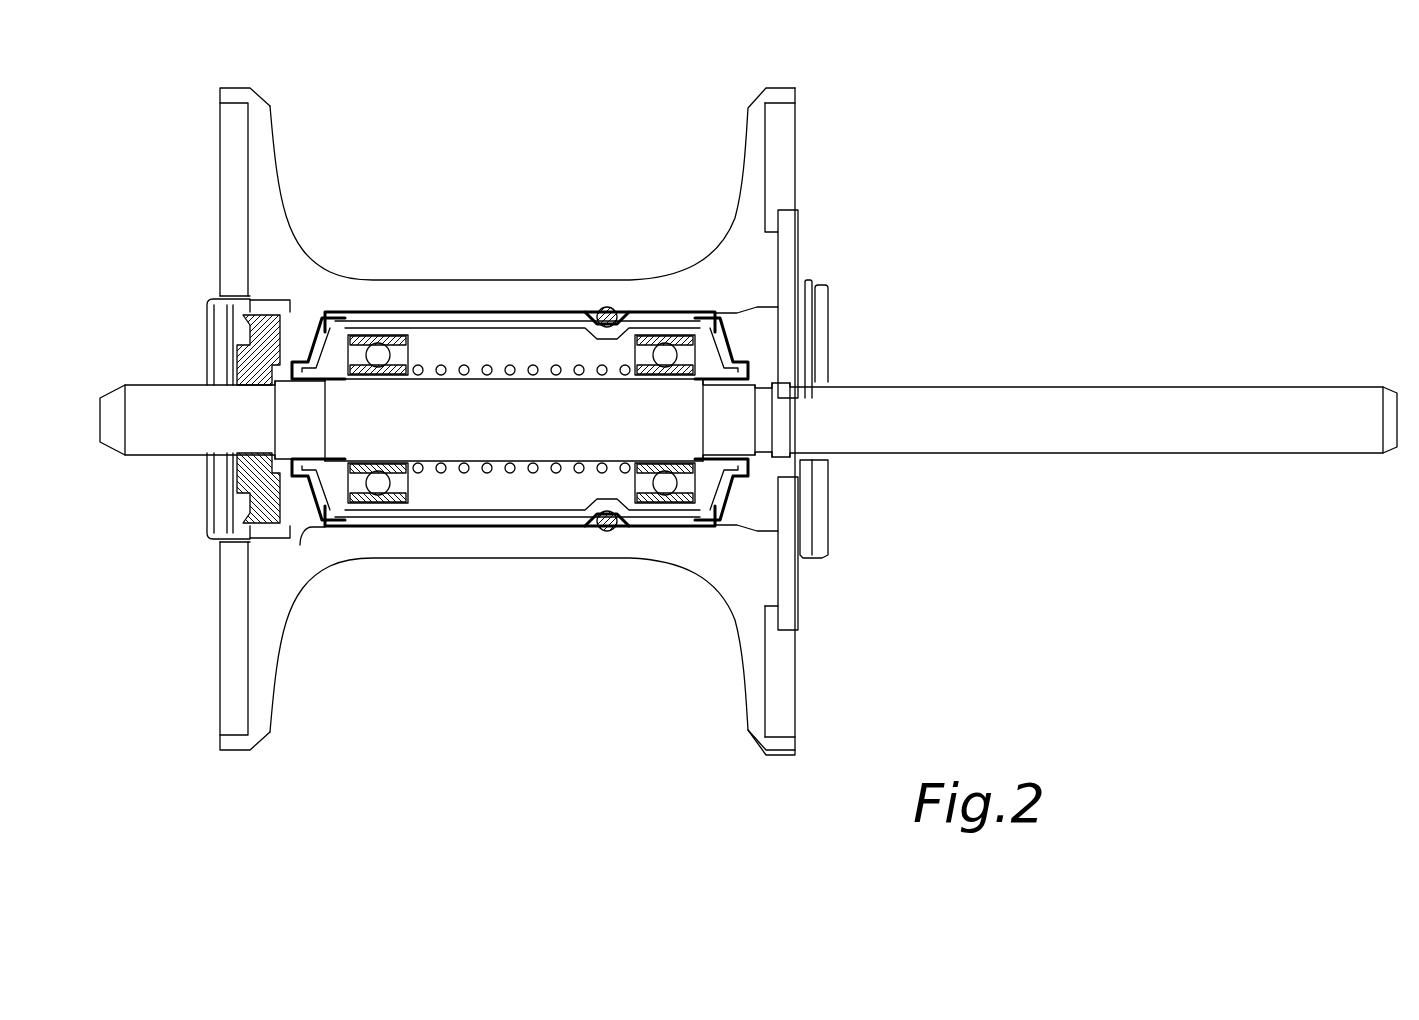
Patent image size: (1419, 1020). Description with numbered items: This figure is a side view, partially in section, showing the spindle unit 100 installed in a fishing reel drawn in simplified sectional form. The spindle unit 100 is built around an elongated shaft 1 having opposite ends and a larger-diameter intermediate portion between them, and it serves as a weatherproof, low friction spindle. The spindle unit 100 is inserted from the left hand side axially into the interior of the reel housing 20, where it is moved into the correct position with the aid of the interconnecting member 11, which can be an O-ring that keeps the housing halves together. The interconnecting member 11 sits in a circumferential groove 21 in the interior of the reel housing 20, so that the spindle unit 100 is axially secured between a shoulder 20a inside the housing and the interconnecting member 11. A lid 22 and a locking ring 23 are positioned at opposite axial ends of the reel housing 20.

The elongated shaft 1 is at (1084, 372).
The reel housing 20 is at (736, 169).
The shoulder 20a is at (326, 516).
The spindle unit 100 is at (456, 310).
The circumferential groove 21 is at (597, 310).
The interconnecting member 11 is at (618, 307).
The lid 22 is at (246, 376).
The locking ring 23 is at (804, 477).